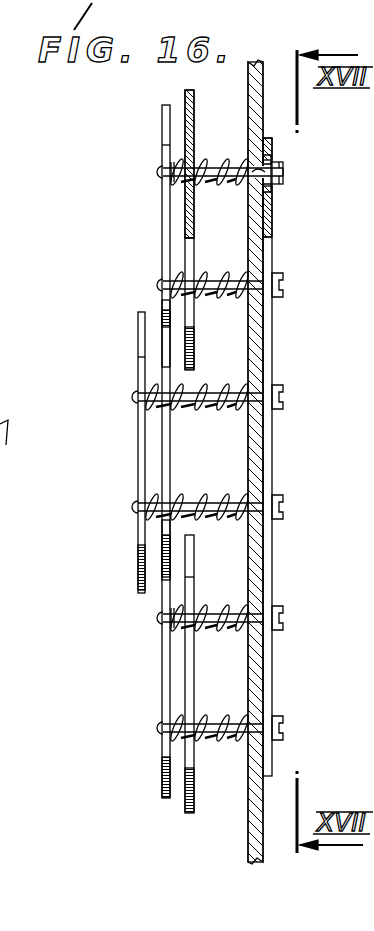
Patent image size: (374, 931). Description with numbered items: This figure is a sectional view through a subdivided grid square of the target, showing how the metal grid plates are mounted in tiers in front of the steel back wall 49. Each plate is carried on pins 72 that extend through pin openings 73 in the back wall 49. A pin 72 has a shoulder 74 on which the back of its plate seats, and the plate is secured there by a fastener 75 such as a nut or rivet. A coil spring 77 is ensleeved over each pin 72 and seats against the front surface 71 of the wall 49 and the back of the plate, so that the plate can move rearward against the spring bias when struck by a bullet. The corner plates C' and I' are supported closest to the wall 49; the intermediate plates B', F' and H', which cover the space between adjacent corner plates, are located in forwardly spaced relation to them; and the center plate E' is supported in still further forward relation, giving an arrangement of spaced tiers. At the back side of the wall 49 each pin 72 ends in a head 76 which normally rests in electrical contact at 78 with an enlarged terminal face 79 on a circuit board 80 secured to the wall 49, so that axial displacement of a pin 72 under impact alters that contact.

The front surface 71 is at (245, 832).
The steel back wall 49 is at (257, 670).
The circuit board 80 is at (273, 262).
The pin 72 is at (243, 166).
The pin opening 73 is at (284, 172).
The shoulder 74 is at (200, 163).
The fastener 75 is at (175, 192).
The head 76 is at (284, 182).
The coil spring 77 is at (215, 192).
The electrical contact 78 is at (273, 160).
The terminal face 79 is at (272, 188).
The grid plate B' is at (122, 236).
The corner grid plate C' is at (147, 230).
The center plate E' is at (107, 452).
The grid plate F' is at (120, 440).
The grid plate H' is at (119, 659).
The corner grid plate I' is at (139, 674).